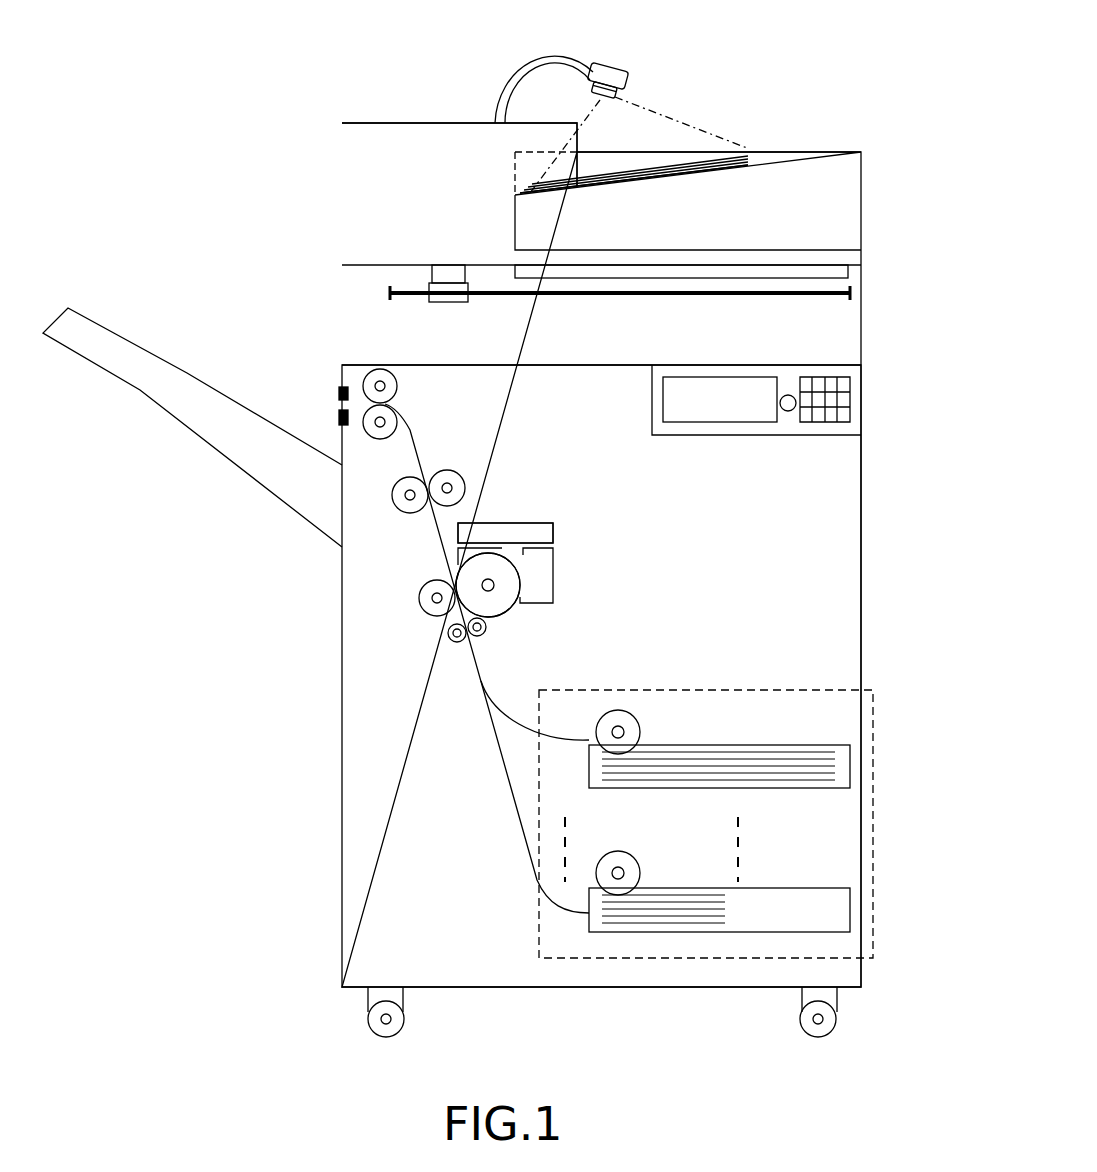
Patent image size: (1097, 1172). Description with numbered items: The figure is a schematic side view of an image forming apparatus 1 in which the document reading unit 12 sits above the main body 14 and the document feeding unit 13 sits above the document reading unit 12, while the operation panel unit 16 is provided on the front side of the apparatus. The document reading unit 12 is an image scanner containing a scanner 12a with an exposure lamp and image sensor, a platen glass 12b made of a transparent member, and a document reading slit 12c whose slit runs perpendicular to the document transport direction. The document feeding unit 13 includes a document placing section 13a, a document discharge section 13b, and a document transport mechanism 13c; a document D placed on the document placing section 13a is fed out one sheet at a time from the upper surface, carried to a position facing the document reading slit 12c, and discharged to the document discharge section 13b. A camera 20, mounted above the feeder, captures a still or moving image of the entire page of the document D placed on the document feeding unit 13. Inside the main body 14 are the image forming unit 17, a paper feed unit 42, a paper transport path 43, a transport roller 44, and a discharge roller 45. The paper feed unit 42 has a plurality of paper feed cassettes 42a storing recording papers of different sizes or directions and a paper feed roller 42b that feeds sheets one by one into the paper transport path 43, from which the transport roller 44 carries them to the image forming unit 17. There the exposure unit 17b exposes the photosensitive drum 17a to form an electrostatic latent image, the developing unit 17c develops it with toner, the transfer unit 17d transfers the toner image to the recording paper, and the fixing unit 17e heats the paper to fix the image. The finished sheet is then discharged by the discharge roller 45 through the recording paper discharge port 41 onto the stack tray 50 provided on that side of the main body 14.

The image forming apparatus 1 is at (262, 152).
The document reading unit 12 is at (330, 305).
The scanner 12a is at (452, 303).
The platen glass 12b is at (840, 275).
The document reading slit 12c is at (456, 271).
The document feeding unit 13 is at (330, 195).
The document placing section 13a is at (752, 170).
The document discharge section 13b is at (717, 248).
The document transport mechanism 13c is at (403, 130).
The main body 14 is at (872, 645).
The operation panel unit 16 is at (857, 420).
The image forming unit 17 is at (665, 546).
The photosensitive drum 17a is at (503, 615).
The exposure unit 17b is at (553, 533).
The developing unit 17c is at (553, 578).
The transfer unit 17d is at (420, 595).
The fixing unit 17e is at (466, 488).
The camera 20 is at (632, 70).
The recording paper discharge port 41 is at (338, 405).
The paper feed unit 42 is at (873, 748).
The paper feed cassette 42a is at (772, 745).
The paper feed roller 42b is at (640, 735).
The paper transport path 43 is at (468, 648).
The transport roller 44 is at (447, 635).
The discharge roller 45 is at (398, 383).
The stack tray 50 is at (212, 470).
The document D is at (620, 188).